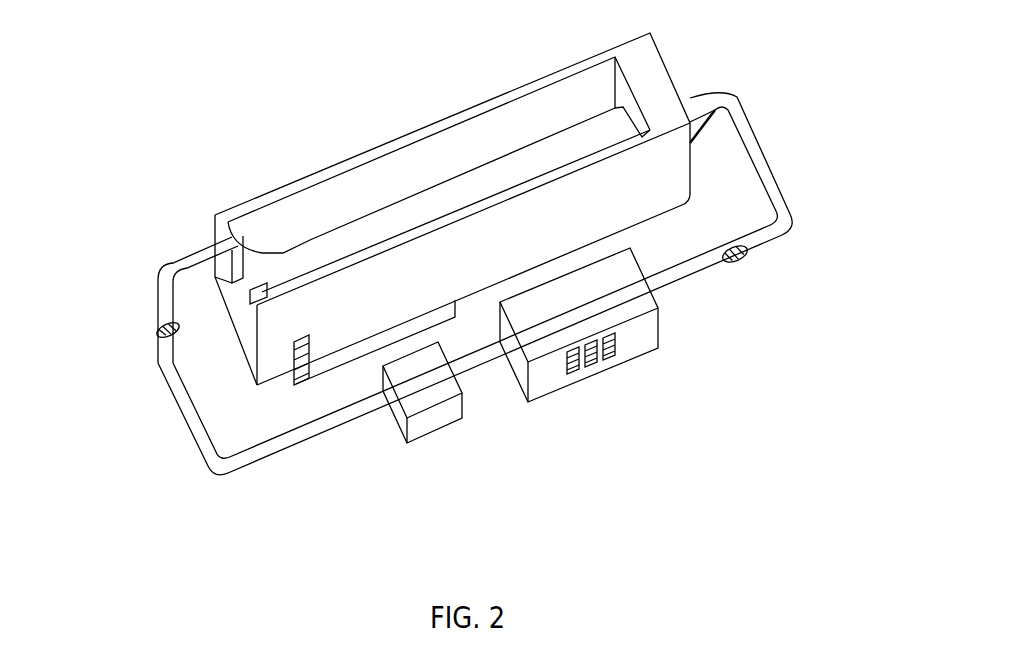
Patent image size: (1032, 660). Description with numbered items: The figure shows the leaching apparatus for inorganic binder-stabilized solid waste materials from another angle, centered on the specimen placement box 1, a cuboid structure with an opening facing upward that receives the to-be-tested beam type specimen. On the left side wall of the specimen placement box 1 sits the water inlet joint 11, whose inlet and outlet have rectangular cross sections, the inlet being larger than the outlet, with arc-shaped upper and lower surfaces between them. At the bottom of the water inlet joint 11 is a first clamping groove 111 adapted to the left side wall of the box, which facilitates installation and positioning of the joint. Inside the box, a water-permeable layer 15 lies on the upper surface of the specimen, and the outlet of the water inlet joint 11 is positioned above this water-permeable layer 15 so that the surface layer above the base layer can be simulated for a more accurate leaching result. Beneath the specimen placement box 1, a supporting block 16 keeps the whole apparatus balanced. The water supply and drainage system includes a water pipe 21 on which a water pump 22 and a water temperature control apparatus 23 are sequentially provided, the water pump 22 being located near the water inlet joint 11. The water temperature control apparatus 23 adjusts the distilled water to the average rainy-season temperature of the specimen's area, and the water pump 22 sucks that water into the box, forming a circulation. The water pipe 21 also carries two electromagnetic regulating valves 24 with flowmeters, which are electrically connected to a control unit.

The specimen placement box 1 is at (645, 60).
The water inlet joint 11 is at (300, 268).
The first clamping groove 111 is at (252, 302).
The water-permeable layer 15 is at (455, 195).
The supporting block 16 is at (340, 358).
The water pipe 21 is at (195, 447).
The water pump 22 is at (423, 393).
The water temperature control apparatus 23 is at (592, 312).
The electromagnetic regulating valve with flowmeter 24 is at (156, 339).